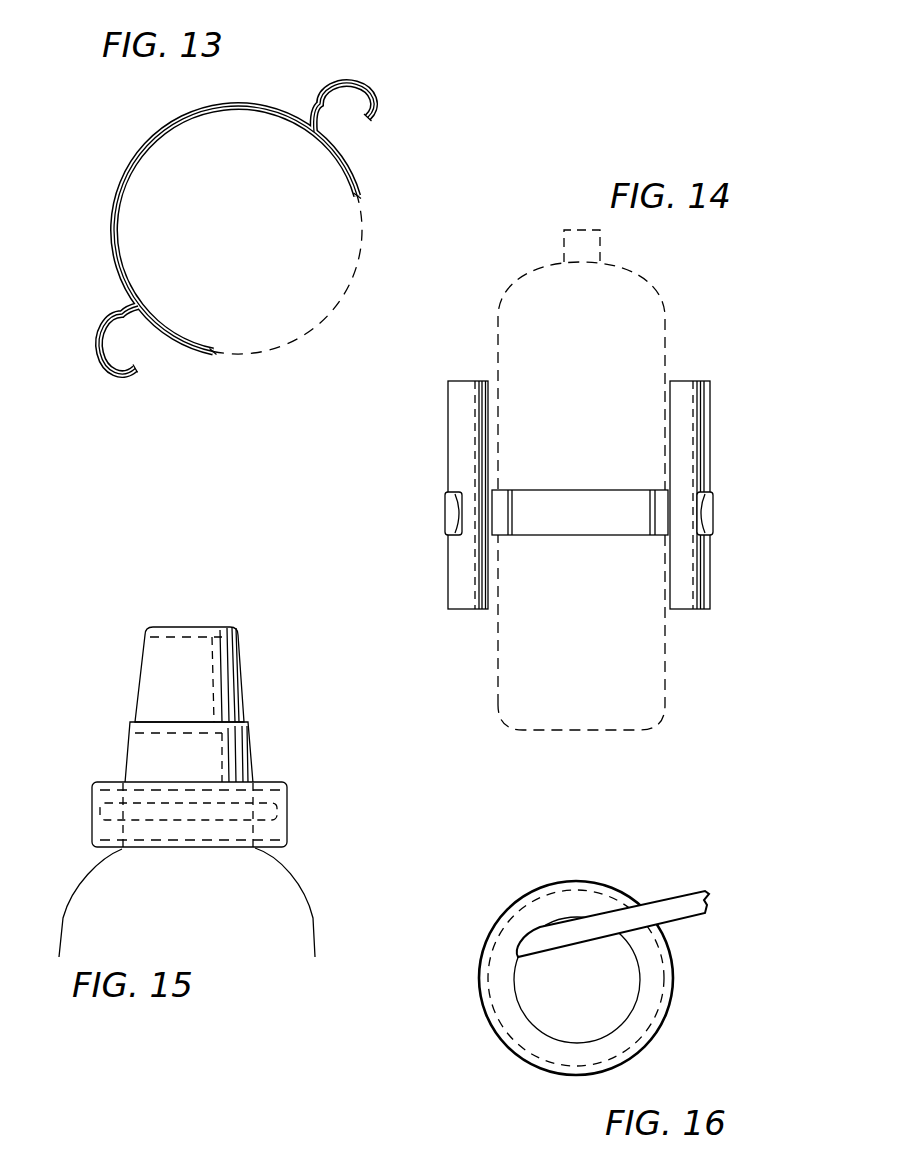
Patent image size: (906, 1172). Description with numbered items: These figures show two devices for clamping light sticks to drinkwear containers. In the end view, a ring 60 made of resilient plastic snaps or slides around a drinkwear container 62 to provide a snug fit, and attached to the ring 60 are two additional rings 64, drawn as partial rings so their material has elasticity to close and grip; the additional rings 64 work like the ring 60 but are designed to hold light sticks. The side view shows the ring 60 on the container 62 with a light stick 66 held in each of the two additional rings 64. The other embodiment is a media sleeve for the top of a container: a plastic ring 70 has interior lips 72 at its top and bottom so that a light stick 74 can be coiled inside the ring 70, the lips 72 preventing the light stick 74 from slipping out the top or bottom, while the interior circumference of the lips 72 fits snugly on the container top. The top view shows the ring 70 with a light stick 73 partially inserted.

In FIG. 13, the ring 60 is at (128, 126).
In FIG. 14, the ring 60 is at (419, 540).
In FIG. 13, the drinkwear container 62 is at (290, 340).
In FIG. 14, the drinkwear container 62 is at (498, 354).
In FIG. 13, the additional ring 64 is at (371, 91).
In FIG. 14, the additional ring 64 is at (445, 509).
In FIG. 14, the light stick 66 is at (448, 422).
In FIG. 15, the ring 70 is at (301, 748).
In FIG. 16, the ring 70 is at (494, 876).
In FIG. 15, the interior lip 72 is at (112, 782).
In FIG. 16, the interior lip 72 is at (558, 1018).
In FIG. 16, the light stick 73 is at (684, 893).
In FIG. 15, the light stick 74 is at (295, 803).